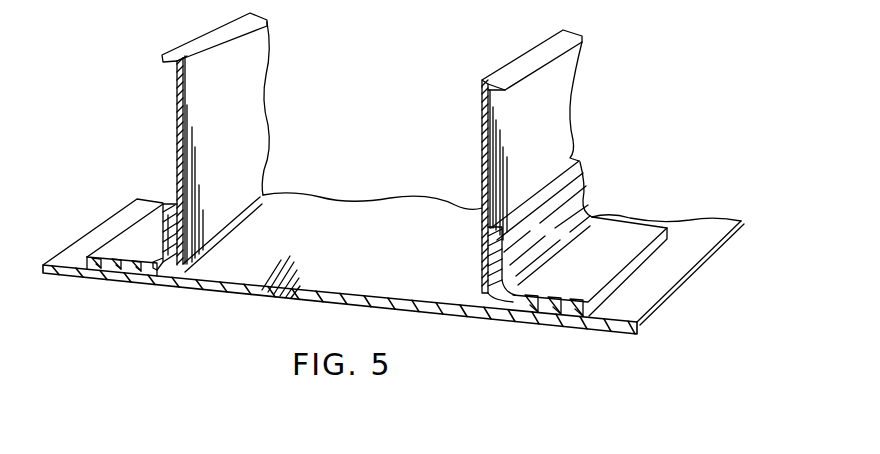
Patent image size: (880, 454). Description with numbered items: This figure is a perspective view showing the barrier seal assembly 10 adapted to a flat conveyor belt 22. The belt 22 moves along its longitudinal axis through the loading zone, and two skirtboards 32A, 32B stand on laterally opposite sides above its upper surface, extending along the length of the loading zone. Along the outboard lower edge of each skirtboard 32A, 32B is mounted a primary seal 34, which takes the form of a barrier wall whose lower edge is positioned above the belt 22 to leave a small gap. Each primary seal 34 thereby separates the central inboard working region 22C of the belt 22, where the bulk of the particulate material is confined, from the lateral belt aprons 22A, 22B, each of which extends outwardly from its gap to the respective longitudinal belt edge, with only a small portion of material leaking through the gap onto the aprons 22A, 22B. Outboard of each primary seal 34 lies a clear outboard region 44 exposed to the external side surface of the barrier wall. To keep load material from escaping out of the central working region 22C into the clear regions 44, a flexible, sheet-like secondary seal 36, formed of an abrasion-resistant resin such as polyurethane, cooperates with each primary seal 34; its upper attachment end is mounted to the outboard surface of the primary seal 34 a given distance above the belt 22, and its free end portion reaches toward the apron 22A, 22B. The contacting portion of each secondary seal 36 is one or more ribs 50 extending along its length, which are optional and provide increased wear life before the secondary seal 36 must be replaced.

The barrier seal assembly 10 is at (115, 200).
The belt 22 is at (260, 293).
The lateral belt apron 22A is at (103, 235).
The lateral belt apron 22B is at (633, 312).
The central inboard working region 22C is at (377, 267).
The skirtboard 32A is at (175, 117).
The skirtboard 32B is at (480, 157).
The primary seal 34 is at (205, 240).
The flexible secondary seal 36 is at (144, 250).
The clear outboard region 44 is at (86, 143).
The rib 50 is at (100, 270).